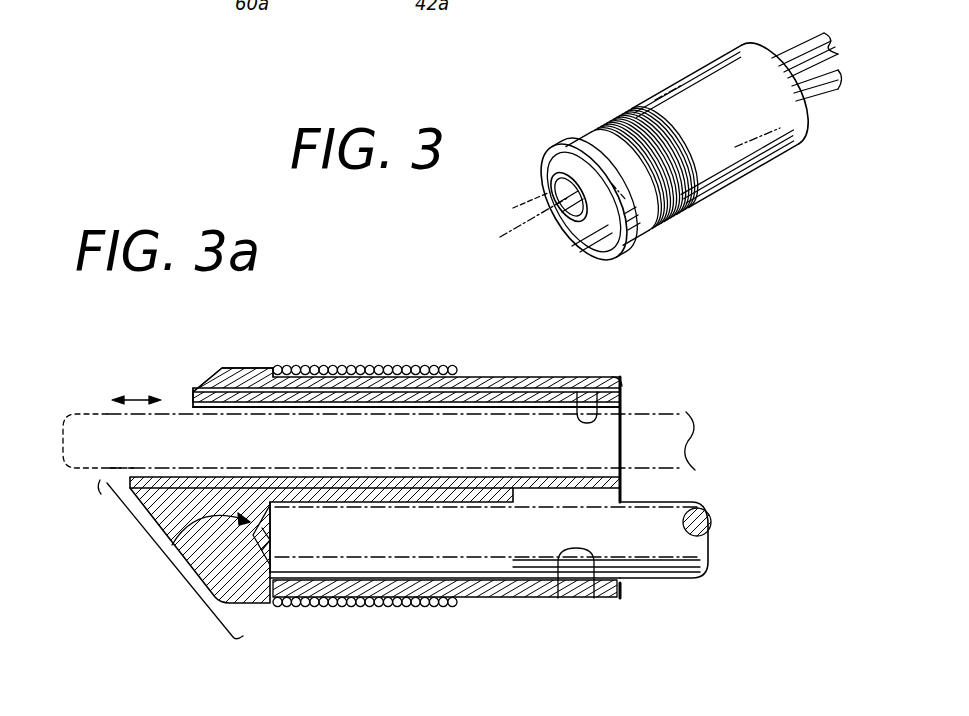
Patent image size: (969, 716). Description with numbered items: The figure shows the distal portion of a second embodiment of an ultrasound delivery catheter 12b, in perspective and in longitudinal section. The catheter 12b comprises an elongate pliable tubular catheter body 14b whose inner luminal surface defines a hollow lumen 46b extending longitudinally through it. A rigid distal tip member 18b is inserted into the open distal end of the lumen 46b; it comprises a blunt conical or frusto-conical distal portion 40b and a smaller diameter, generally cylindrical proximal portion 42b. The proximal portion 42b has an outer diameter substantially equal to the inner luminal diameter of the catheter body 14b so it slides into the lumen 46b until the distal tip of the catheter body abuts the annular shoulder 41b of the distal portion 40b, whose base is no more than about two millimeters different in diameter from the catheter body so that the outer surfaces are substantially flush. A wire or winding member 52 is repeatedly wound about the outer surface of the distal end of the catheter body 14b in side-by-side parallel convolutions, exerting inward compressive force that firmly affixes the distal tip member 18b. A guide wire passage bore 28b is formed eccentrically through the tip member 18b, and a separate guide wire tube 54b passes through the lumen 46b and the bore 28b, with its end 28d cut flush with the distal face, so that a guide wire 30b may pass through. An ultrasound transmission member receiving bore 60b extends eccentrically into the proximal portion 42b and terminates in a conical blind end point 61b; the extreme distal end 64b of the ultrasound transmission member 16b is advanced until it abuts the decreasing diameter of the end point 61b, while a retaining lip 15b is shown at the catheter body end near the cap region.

In FIG. 3, the catheter 12b is at (722, 221).
In FIG. 3, the catheter body 14b is at (692, 97).
In FIG. 3a, the catheter body 14b is at (417, 374).
In FIG. 3, the ultrasound transmission member 16b is at (810, 97).
In FIG. 3a, the ultrasound transmission member 16b is at (678, 541).
In FIG. 3, the distal tip member 18b is at (550, 167).
In FIG. 3a, the distal tip member 18b is at (254, 377).
In FIG. 3, the guide wire passage bore 28b is at (512, 220).
In FIG. 3a, the tube end 28d is at (190, 410).
In FIG. 3, the guide wire 30b is at (797, 57).
In FIG. 3a, the guide wire 30b is at (87, 430).
In FIG. 3, the winding member 52 is at (566, 125).
In FIG. 3a, the winding member 52 is at (457, 308).
In FIG. 3, the guide wire tube 54b is at (553, 227).
In FIG. 3a, the guide wire tube 54b is at (498, 480).
In FIG. 3a, the retaining lip 15b is at (602, 420).
In FIG. 3a, the lumen 46b is at (628, 395).
In FIG. 3a, the cylindrical proximal portion 42b is at (482, 403).
In FIG. 3a, the annular shoulder 41b is at (220, 370).
In FIG. 3a, the distal portion 40b is at (165, 577).
In FIG. 3a, the ultrasound transmission member receiving bore 60b is at (233, 548).
In FIG. 3a, the blind end point 61b is at (222, 513).
In FIG. 3a, the extreme distal end 64b is at (283, 540).